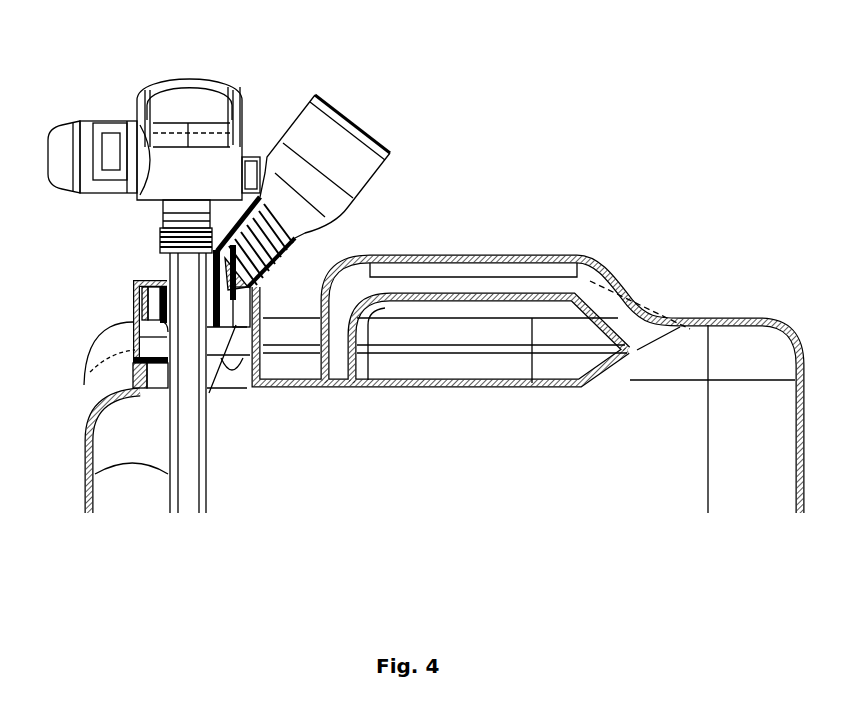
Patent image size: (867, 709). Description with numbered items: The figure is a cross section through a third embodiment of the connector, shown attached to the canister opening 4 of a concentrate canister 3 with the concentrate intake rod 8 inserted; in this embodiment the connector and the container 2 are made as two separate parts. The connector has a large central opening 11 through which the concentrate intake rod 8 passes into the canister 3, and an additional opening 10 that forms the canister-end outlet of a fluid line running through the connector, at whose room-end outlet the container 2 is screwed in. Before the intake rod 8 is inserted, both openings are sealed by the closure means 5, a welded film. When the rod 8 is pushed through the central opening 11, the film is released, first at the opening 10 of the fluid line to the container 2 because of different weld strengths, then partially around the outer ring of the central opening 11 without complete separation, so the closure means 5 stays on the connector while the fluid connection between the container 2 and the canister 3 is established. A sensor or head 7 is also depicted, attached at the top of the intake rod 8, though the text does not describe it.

The container 2 is at (342, 115).
The canister 3 is at (578, 255).
The canister opening 4 is at (133, 309).
The closure means 5 is at (268, 345).
The sensor 7 is at (182, 70).
The concentrate intake rod 8 is at (84, 476).
The additional opening 10 is at (263, 332).
The central opening 11 is at (110, 330).